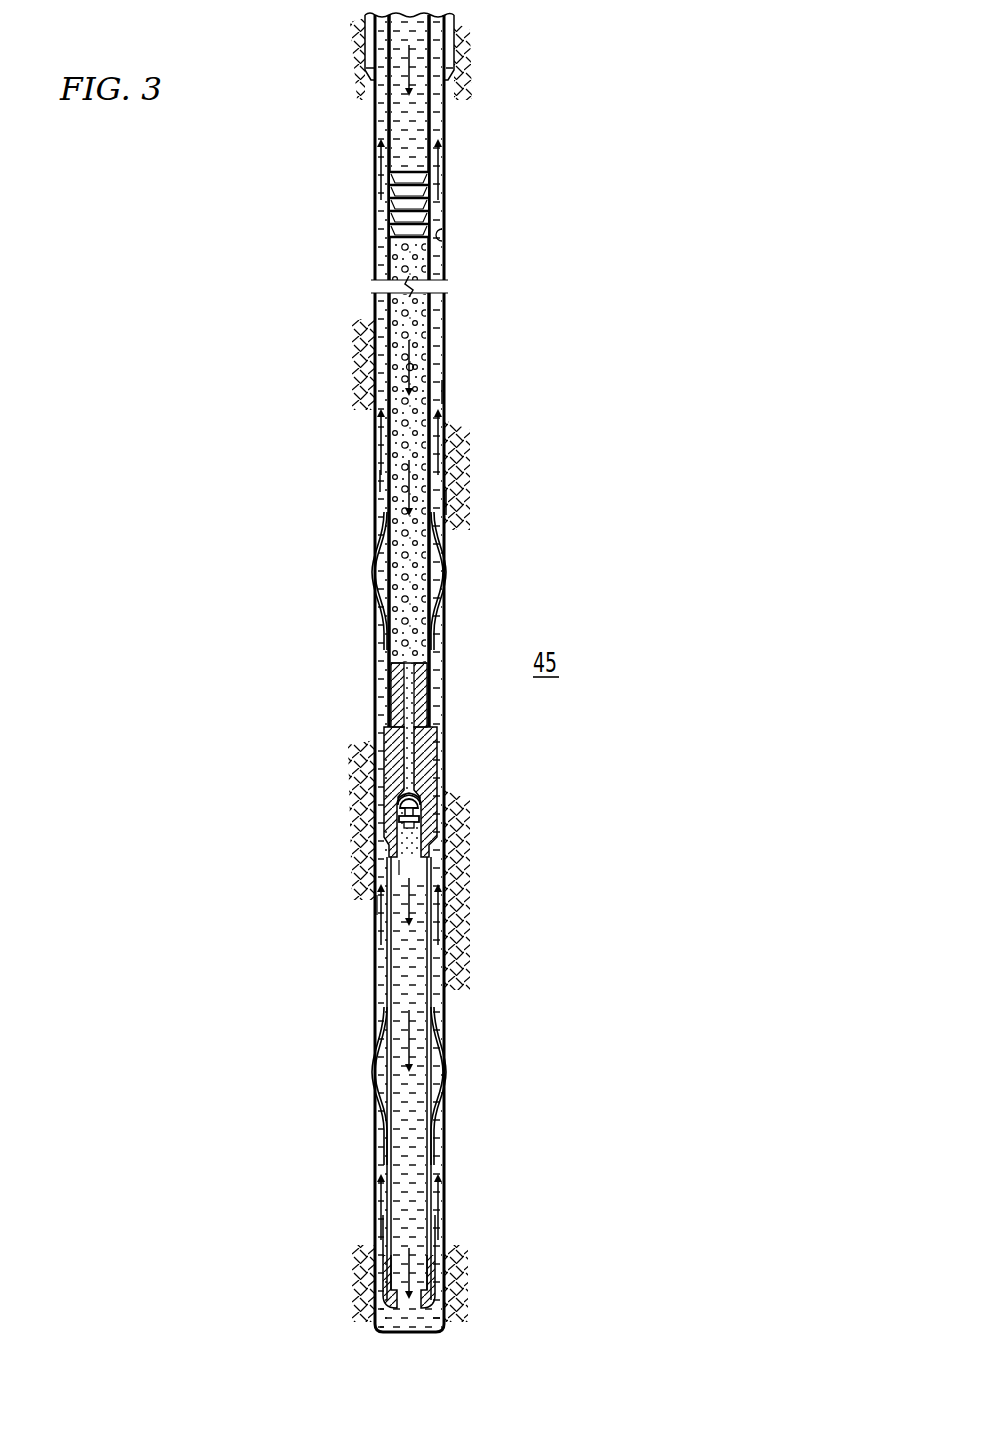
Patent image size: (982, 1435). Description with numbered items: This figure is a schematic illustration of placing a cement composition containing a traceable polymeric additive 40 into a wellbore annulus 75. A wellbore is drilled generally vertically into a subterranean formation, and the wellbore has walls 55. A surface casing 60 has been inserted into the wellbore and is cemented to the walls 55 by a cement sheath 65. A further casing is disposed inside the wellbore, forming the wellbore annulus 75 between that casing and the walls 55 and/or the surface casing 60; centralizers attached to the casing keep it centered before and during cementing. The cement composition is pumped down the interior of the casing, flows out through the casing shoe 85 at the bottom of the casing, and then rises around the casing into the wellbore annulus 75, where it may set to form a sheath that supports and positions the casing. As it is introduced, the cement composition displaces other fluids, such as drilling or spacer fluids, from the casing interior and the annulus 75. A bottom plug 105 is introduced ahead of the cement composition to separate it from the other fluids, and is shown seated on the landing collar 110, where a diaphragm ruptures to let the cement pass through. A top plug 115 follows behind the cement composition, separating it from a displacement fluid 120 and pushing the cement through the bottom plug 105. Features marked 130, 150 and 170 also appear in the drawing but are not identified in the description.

The traceable polymeric additive 40 is at (413, 330).
The walls 55 is at (447, 237).
The surface casing 60 is at (455, 20).
The cement sheath 65 is at (465, 46).
The wellbore annulus 75 is at (380, 482).
The casing shoe 85 is at (378, 1256).
The bottom plug 105 is at (376, 682).
The landing collar 110 is at (384, 762).
The top plug 115 is at (375, 222).
The displacement fluid 120 is at (455, 70).
The gas bubbles 130 is at (417, 367).
The formation fluid inflow 150 is at (462, 503).
The casing inner wall 170 is at (441, 392).